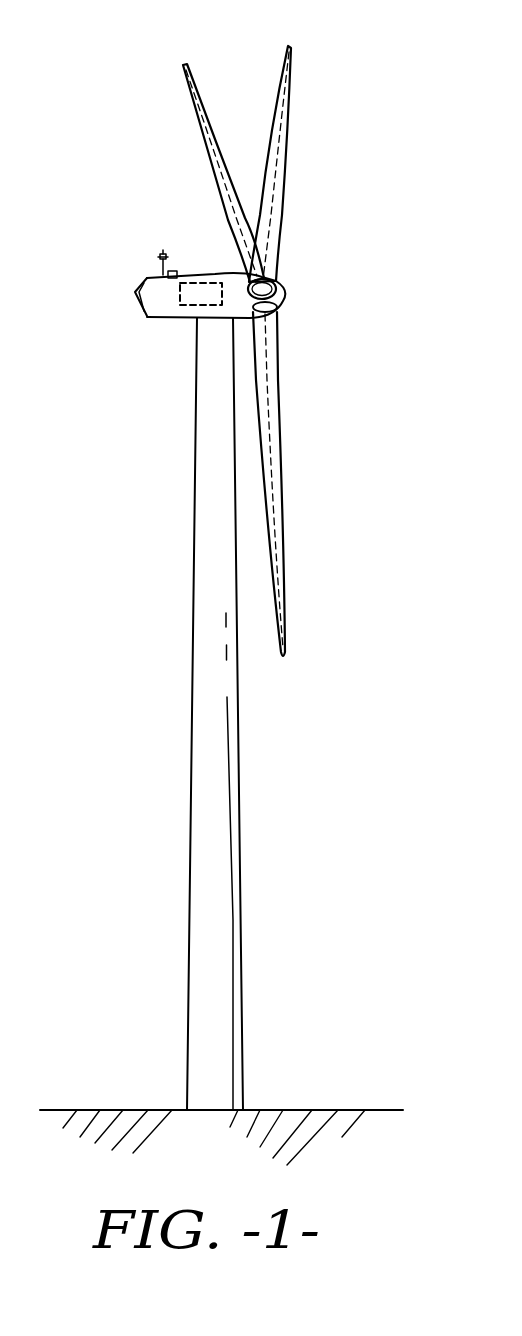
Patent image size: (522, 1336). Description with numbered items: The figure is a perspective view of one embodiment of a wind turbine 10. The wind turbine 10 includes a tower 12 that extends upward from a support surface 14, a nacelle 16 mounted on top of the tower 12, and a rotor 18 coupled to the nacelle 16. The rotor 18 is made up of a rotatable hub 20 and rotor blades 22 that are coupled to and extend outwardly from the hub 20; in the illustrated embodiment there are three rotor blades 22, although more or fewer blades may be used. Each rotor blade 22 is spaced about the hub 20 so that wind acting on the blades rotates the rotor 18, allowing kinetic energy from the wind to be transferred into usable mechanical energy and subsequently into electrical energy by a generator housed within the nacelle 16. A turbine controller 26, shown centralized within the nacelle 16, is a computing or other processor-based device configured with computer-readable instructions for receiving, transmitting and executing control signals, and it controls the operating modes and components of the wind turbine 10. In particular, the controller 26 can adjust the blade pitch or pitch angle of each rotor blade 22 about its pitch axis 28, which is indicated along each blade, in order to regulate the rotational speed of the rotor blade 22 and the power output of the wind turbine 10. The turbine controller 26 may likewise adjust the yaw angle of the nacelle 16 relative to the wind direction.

The wind turbine 10 is at (382, 120).
The tower 12 is at (202, 822).
The support surface 14 is at (118, 1108).
The nacelle 16 is at (176, 320).
The rotor 18 is at (328, 287).
The rotatable hub 20 is at (290, 294).
The rotor blade 22 is at (283, 87).
The turbine controller 26 is at (207, 283).
The pitch axis 28 is at (222, 182).